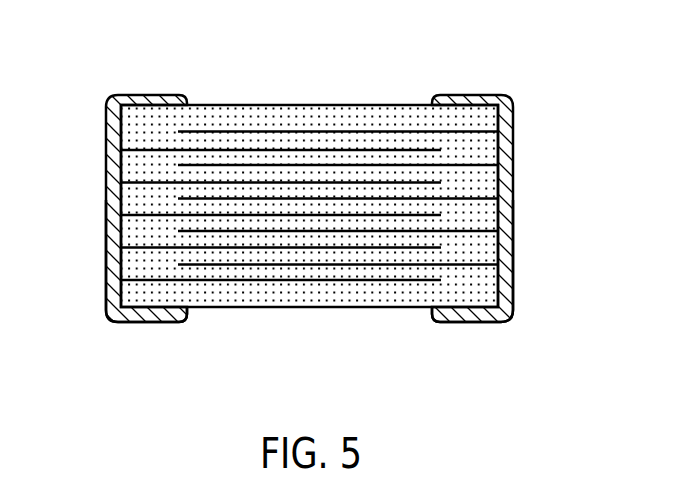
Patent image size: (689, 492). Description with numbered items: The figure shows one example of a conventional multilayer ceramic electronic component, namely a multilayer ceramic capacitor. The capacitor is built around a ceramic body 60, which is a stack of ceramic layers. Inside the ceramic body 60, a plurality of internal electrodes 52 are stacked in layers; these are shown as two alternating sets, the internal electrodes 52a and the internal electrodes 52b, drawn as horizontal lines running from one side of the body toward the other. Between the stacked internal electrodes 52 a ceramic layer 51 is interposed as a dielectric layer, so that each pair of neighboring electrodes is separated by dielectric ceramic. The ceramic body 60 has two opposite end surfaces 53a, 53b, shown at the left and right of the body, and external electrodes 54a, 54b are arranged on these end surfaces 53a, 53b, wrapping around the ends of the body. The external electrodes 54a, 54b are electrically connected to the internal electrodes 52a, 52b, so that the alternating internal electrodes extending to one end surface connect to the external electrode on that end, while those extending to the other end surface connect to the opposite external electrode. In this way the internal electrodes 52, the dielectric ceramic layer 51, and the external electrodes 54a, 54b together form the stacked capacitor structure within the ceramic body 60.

The ceramic layer 51 is at (403, 158).
The internal electrodes 52 is at (309, 193).
The internal electrode 52a is at (263, 152).
The internal electrode 52b is at (208, 231).
The end surface 53a is at (107, 168).
The end surface 53b is at (498, 143).
The external electrode 54a is at (107, 240).
The external electrode 54b is at (513, 222).
The ceramic body 60 is at (309, 197).